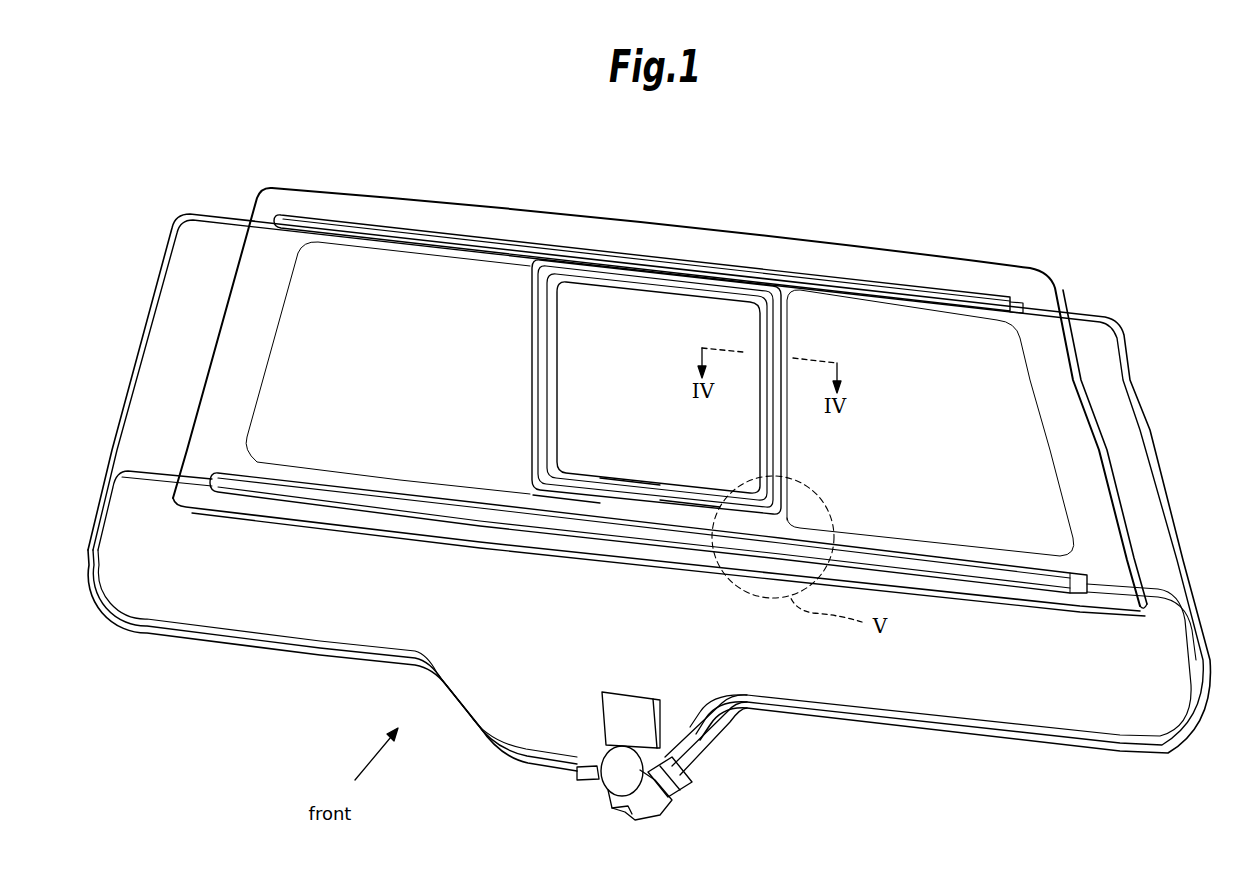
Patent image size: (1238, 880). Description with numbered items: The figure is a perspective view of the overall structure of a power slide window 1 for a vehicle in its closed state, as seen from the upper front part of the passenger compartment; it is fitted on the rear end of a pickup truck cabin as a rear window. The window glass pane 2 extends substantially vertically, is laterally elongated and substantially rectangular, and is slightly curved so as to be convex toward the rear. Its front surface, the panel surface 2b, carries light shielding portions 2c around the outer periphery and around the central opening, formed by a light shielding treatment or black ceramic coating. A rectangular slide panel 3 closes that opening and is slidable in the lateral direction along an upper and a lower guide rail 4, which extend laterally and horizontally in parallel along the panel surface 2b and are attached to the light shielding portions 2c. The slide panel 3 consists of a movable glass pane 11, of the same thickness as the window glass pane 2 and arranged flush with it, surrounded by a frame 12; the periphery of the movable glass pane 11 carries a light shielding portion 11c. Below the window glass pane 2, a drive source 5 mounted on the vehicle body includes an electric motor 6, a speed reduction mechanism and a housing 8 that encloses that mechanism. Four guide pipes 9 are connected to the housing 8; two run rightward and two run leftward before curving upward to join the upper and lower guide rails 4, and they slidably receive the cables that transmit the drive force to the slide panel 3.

The power slide window 1 is at (998, 157).
The window glass pane 2 is at (775, 219).
The panel surface 2b is at (477, 310).
The light shielding portion 2c is at (900, 253).
The slide panel 3 is at (612, 268).
The guide rail 4 is at (973, 297).
The drive source 5 is at (662, 820).
The electric motor 6 is at (692, 790).
The housing 8 is at (597, 760).
The guide pipe 9 is at (218, 648).
The movable glass pane 11 is at (630, 483).
The light shielding portion 11c is at (690, 505).
The frame 12 is at (573, 503).